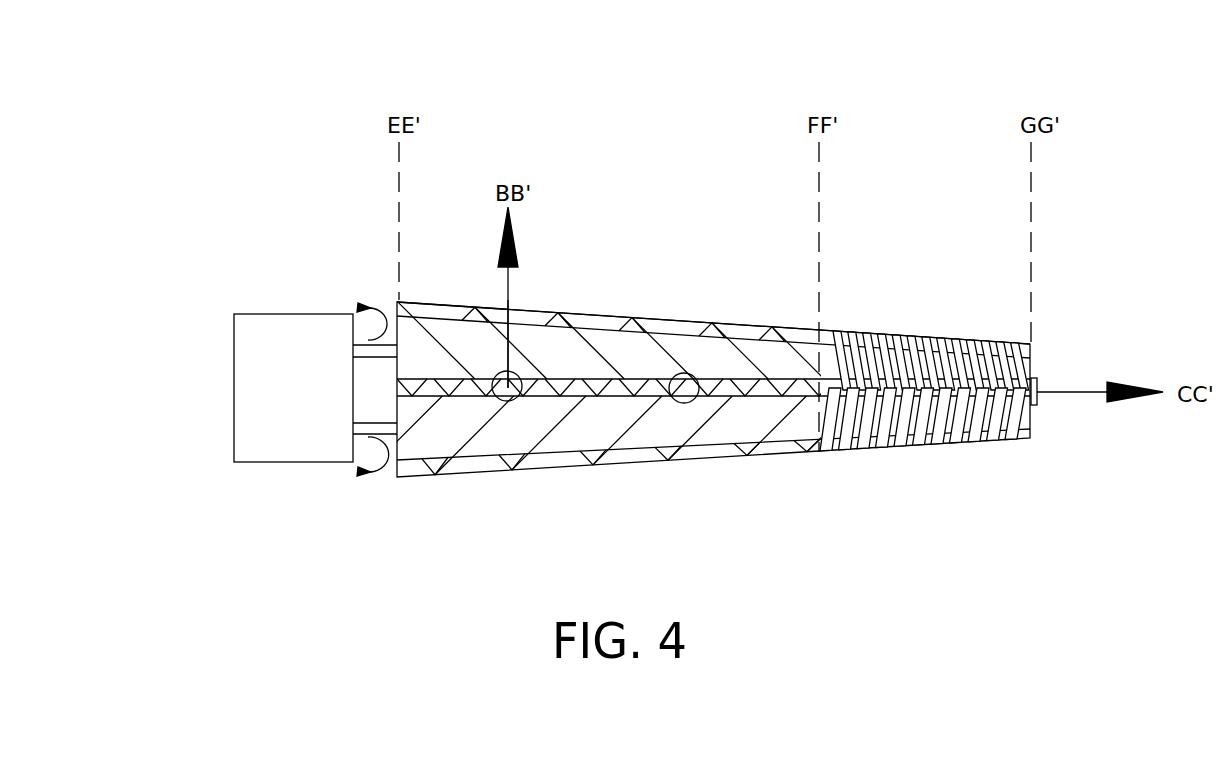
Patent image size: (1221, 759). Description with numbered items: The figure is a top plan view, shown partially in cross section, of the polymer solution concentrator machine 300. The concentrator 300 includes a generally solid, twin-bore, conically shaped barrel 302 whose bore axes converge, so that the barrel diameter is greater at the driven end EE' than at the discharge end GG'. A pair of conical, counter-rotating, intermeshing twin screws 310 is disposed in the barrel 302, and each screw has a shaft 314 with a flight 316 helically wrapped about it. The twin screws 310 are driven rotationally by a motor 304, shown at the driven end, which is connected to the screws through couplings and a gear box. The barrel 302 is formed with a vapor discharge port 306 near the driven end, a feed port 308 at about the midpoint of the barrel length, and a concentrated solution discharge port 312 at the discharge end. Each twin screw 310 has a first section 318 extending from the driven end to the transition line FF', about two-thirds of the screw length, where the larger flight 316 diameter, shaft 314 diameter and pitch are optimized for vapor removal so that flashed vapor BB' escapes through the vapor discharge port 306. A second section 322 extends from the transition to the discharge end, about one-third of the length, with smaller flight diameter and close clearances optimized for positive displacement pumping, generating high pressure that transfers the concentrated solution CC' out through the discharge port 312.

The polymer solution concentrator machine 300 is at (348, 78).
The conically shaped barrel 302 is at (618, 465).
The motor 304 is at (294, 313).
The vapor discharge port 306 is at (519, 381).
The feed port 308 is at (690, 376).
The twin screws 310 is at (410, 345).
The concentrated solution discharge port 312 is at (1038, 400).
The shaft 314 is at (622, 325).
The flight 316 is at (513, 378).
The first section 318 is at (745, 323).
The second section 322 is at (915, 335).